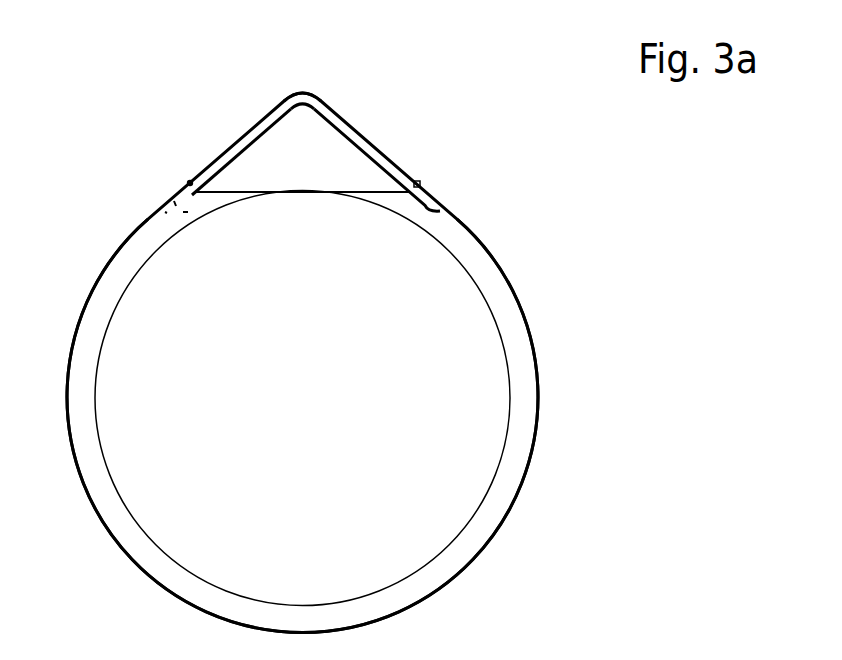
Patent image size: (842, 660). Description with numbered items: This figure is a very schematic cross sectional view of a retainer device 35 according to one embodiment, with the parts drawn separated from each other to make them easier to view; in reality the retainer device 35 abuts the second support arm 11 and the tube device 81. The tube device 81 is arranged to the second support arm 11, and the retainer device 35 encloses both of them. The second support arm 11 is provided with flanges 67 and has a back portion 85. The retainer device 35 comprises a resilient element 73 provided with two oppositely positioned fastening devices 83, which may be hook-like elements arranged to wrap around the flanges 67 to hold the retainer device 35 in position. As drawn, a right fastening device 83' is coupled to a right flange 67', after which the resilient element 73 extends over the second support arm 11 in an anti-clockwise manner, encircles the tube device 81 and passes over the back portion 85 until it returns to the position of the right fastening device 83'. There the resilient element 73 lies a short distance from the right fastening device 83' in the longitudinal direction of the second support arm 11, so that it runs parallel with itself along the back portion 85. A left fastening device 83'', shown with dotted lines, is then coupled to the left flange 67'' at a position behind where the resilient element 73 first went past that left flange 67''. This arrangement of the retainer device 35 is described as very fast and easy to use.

The second support arm 11 is at (323, 170).
The retainer device 35 is at (513, 283).
The flanges 67 is at (302, 201).
The right flange 67' is at (377, 199).
The left flange 67'' is at (228, 201).
The resilient element 73 is at (539, 387).
The tube device 81 is at (320, 416).
The fastening devices 83 is at (306, 192).
The right fastening device 83' is at (499, 191).
The left fastening device 83'' is at (110, 194).
The back portion 85 is at (302, 104).